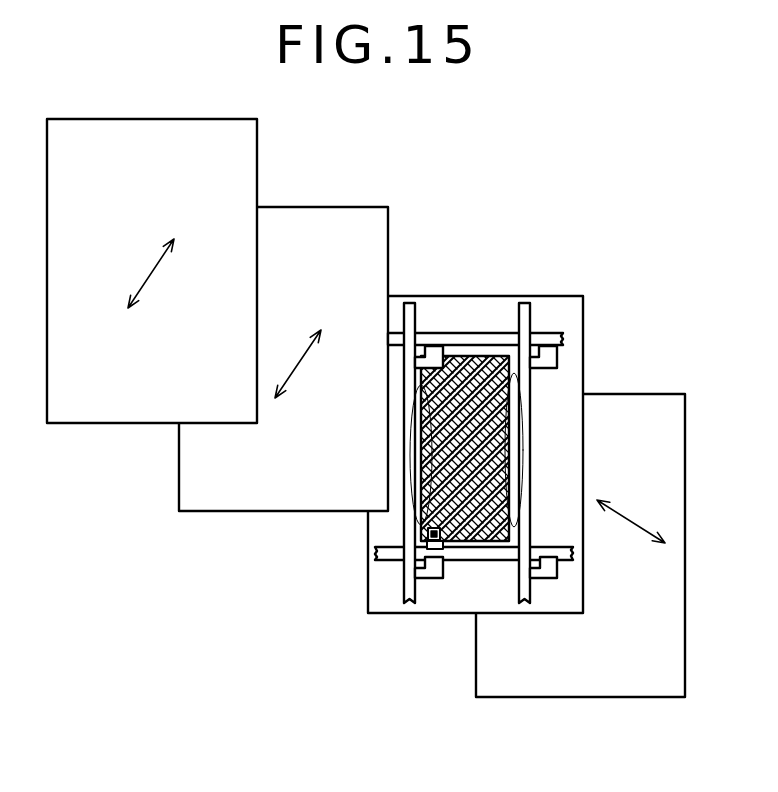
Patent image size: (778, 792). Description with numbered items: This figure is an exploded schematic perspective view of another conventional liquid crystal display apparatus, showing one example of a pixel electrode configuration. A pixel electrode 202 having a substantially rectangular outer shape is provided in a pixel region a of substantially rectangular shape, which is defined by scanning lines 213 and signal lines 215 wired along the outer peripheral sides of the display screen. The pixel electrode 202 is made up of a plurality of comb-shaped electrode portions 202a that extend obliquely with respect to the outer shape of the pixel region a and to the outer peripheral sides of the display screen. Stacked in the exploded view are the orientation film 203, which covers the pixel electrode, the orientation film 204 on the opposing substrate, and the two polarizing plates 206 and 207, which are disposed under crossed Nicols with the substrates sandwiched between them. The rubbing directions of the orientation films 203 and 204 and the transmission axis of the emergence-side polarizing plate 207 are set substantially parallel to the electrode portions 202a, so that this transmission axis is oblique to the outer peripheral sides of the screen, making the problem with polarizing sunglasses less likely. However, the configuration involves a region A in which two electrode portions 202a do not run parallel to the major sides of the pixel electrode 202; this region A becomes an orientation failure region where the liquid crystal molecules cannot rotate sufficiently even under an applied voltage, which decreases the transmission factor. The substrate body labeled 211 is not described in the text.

The pixel electrode 202 is at (459, 355).
The electrode portions 202a is at (503, 410).
The orientation film 203 is at (283, 395).
The orientation film 204 is at (222, 513).
The polarizing plate 206 is at (679, 393).
The polarizing plate 207 is at (78, 425).
The active matrix substrate 211 is at (563, 295).
The scanning lines 213 is at (567, 340).
The signal lines 215 is at (410, 607).
The pixel region a is at (495, 342).
The region A is at (410, 523).